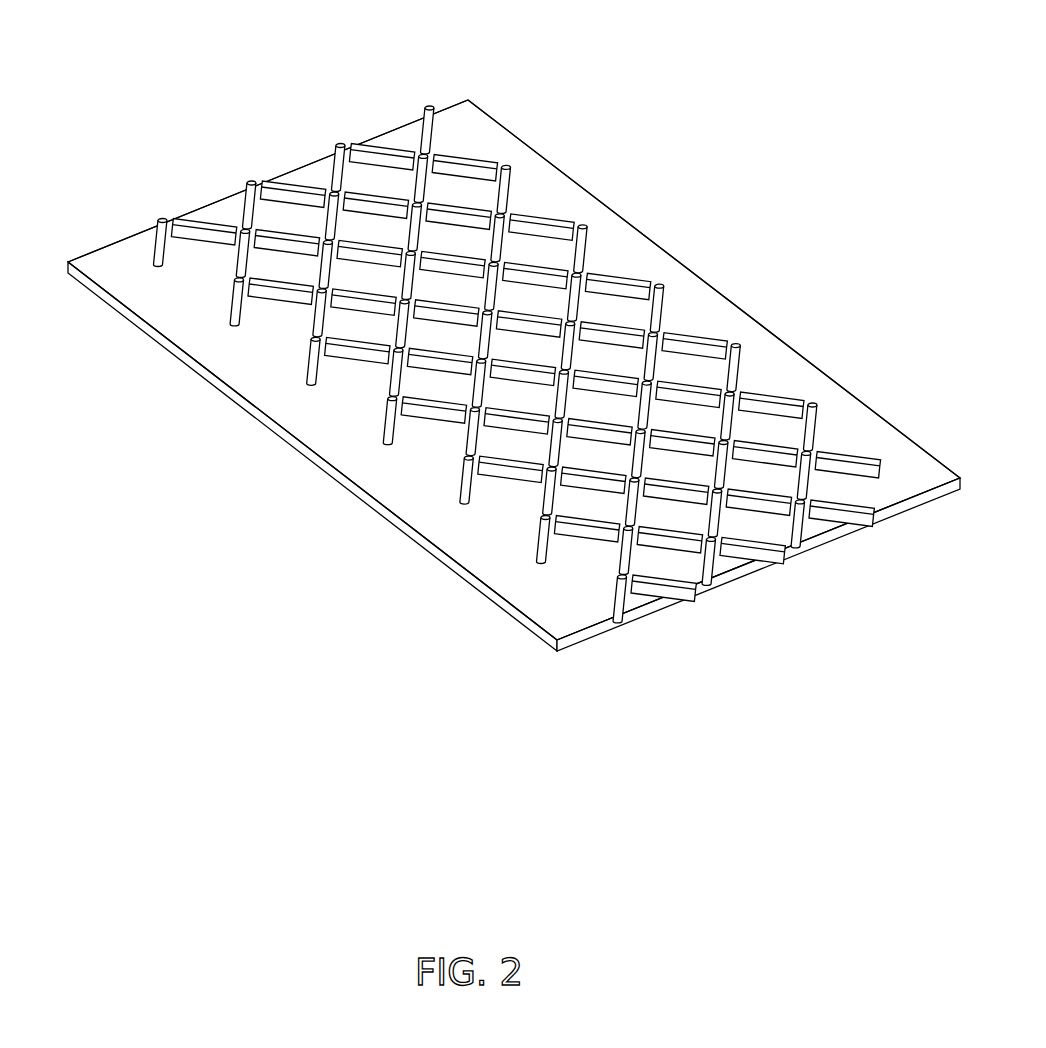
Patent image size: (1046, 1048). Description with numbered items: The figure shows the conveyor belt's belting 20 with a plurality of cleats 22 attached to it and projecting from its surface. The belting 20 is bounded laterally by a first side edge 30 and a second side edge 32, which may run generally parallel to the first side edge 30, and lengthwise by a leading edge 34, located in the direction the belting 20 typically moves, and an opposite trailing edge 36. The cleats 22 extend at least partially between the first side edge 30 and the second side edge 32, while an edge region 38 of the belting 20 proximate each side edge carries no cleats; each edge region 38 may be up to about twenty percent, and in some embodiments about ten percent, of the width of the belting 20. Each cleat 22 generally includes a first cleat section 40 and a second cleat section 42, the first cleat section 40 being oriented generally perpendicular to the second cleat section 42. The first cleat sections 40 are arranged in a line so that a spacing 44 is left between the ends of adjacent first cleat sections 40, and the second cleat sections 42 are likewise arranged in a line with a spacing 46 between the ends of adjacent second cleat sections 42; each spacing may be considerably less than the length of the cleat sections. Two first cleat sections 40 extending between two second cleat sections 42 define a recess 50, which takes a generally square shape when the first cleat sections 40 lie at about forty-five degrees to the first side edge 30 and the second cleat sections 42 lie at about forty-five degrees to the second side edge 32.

The belting 20 is at (468, 565).
The cleats 22 is at (424, 98).
The first side edge 30 is at (514, 370).
The second side edge 32 is at (258, 413).
The leading edge 34 is at (813, 522).
The trailing edge 36 is at (115, 243).
The edge region 38 is at (707, 322).
The first cleat section 40 is at (482, 205).
The second cleat section 42 is at (335, 207).
The spacing 44 is at (577, 217).
The spacing 46 is at (430, 180).
The recess 50 is at (445, 242).